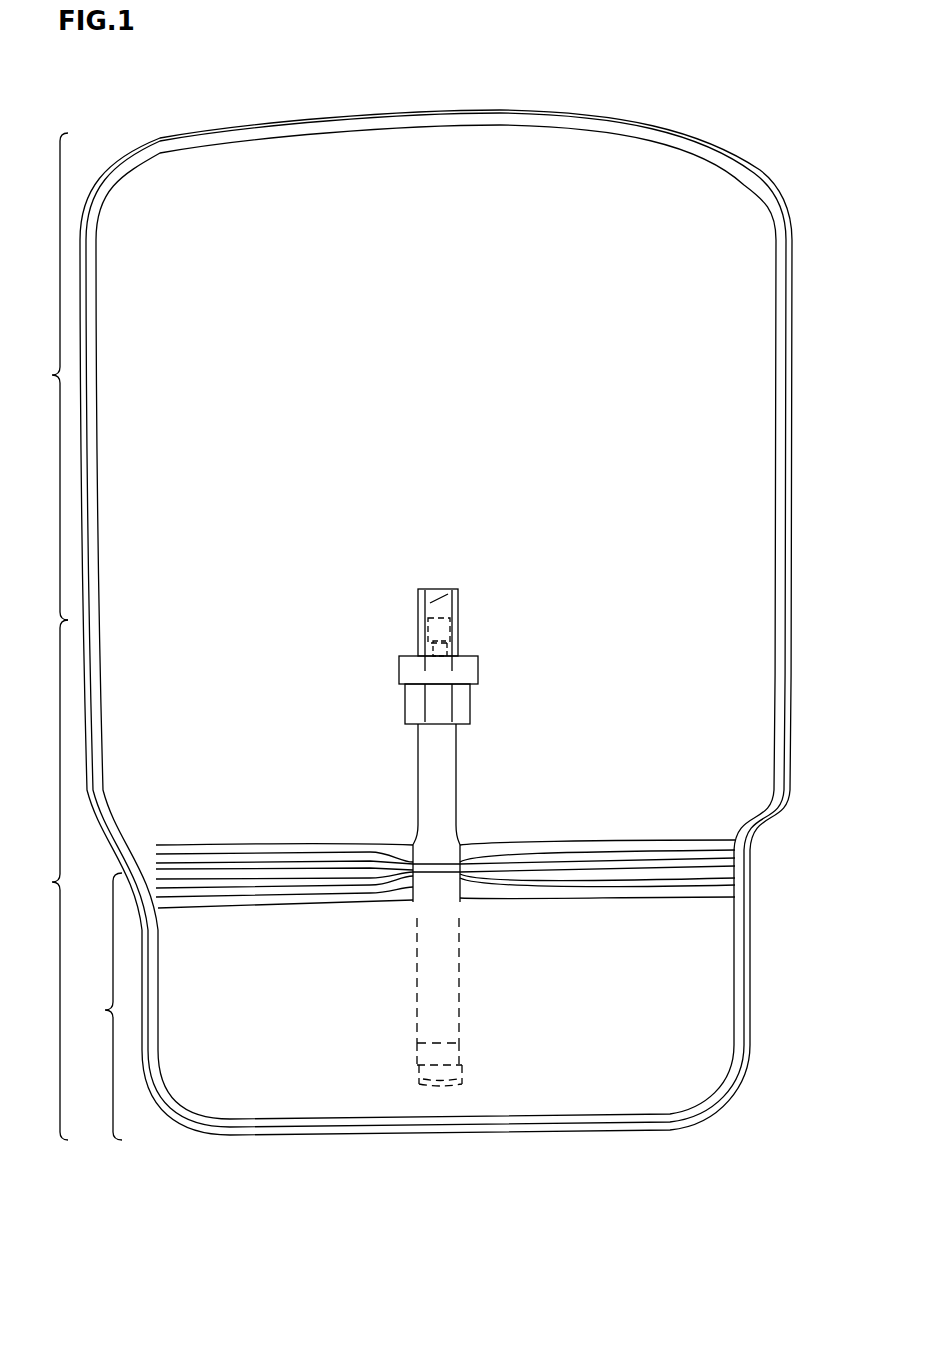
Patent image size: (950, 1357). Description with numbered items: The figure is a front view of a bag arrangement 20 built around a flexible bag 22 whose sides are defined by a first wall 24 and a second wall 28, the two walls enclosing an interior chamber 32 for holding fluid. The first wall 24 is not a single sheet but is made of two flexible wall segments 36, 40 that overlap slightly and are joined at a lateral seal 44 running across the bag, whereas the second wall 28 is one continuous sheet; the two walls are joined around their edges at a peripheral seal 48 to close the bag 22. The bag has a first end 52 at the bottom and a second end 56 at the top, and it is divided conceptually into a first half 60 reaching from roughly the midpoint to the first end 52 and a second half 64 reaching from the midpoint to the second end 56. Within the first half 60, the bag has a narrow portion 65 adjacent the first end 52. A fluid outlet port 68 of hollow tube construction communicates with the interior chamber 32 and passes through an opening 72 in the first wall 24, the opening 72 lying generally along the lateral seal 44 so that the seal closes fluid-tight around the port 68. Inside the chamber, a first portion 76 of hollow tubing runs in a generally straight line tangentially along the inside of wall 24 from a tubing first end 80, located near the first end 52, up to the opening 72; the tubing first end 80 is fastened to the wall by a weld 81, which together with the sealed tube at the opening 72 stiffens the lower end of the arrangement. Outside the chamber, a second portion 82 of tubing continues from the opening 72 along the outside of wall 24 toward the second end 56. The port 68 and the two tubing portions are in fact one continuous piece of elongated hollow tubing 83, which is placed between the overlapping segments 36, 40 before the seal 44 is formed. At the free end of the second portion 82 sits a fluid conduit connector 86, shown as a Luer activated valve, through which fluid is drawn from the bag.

The bag arrangement 20 is at (680, 80).
The bag 22 is at (794, 247).
The first wall 24 is at (762, 397).
The second wall 28 is at (740, 323).
The interior chamber 32 is at (655, 515).
The wall segment 36 is at (748, 772).
The wall segment 40 is at (720, 953).
The lateral seal 44 is at (705, 868).
The peripheral seal 48 is at (748, 1032).
The first end 52 is at (495, 1105).
The second end 56 is at (435, 140).
The first half 60 is at (42, 880).
The second half 64 is at (42, 376).
The narrow portion 65 is at (98, 1006).
The fluid outlet port 68 is at (466, 818).
The opening 72 is at (436, 874).
The first portion of elongated hollow tubing 76 is at (443, 1000).
The tubing first end 80 is at (463, 1073).
The weld 81 is at (450, 1058).
The second portion of elongated hollow tubing 82 is at (452, 763).
The continuous piece of elongated hollow tubing 83 is at (418, 822).
The fluid conduit connector 86 is at (465, 704).